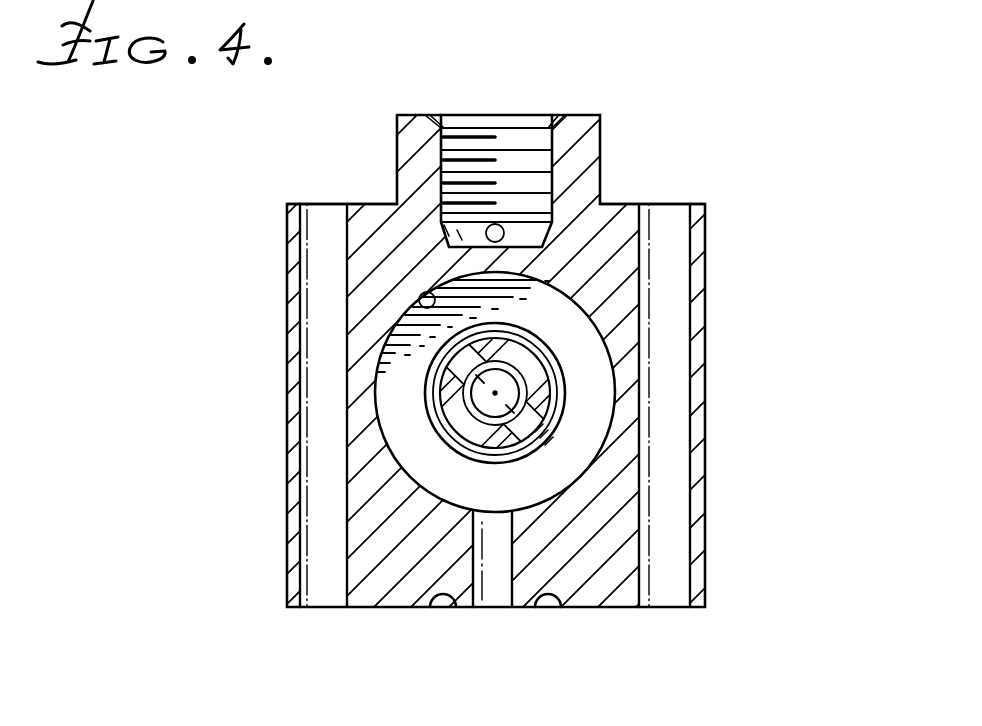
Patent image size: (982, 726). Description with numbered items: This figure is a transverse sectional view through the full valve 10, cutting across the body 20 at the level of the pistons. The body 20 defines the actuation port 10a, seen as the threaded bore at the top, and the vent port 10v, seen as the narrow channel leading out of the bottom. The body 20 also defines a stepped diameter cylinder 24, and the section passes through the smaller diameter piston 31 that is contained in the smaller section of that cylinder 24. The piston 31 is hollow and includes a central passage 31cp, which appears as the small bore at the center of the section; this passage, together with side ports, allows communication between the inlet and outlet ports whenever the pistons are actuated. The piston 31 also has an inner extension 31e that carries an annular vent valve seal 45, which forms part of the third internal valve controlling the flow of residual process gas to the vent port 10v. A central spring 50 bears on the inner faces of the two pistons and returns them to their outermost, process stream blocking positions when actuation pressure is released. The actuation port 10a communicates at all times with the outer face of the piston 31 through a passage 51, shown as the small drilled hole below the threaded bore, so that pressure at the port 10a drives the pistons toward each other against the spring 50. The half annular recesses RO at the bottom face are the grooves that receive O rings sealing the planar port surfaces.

The valve 10 is at (714, 287).
The actuation port 10a is at (524, 143).
The vent port 10v is at (493, 609).
The body 20 is at (617, 205).
The stepped diameter cylinder 24 is at (418, 303).
The piston 31 is at (413, 453).
The central passage 31cp is at (490, 395).
The inner extension 31e is at (450, 382).
The annular vent valve seal 45 is at (490, 393).
The central spring 50 is at (555, 430).
The passage 51 is at (498, 224).
The half annular recesses for O rings RO is at (440, 609).